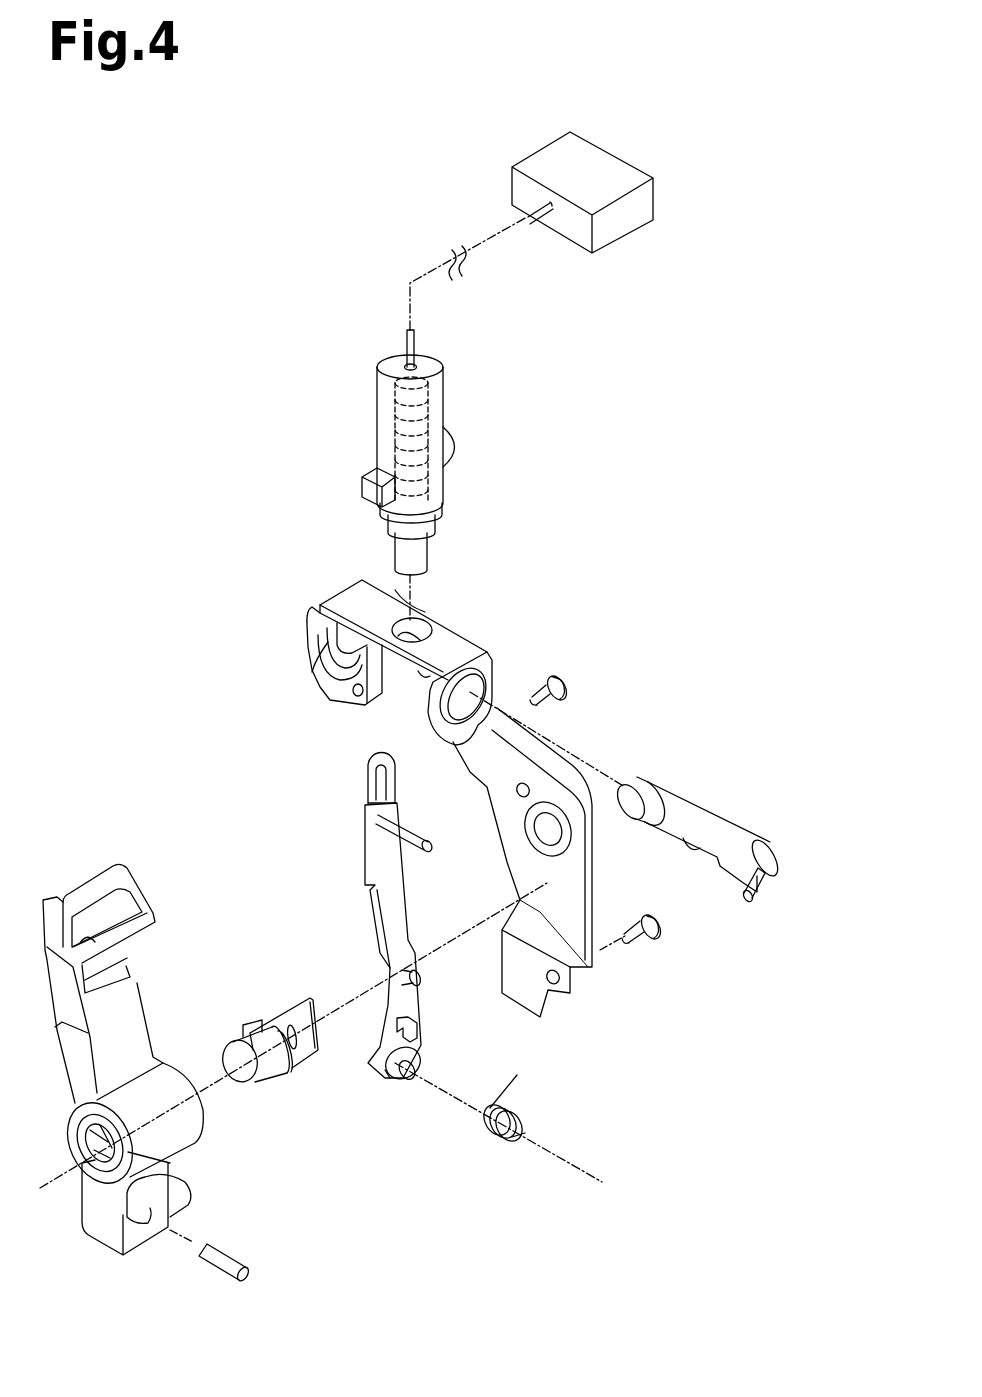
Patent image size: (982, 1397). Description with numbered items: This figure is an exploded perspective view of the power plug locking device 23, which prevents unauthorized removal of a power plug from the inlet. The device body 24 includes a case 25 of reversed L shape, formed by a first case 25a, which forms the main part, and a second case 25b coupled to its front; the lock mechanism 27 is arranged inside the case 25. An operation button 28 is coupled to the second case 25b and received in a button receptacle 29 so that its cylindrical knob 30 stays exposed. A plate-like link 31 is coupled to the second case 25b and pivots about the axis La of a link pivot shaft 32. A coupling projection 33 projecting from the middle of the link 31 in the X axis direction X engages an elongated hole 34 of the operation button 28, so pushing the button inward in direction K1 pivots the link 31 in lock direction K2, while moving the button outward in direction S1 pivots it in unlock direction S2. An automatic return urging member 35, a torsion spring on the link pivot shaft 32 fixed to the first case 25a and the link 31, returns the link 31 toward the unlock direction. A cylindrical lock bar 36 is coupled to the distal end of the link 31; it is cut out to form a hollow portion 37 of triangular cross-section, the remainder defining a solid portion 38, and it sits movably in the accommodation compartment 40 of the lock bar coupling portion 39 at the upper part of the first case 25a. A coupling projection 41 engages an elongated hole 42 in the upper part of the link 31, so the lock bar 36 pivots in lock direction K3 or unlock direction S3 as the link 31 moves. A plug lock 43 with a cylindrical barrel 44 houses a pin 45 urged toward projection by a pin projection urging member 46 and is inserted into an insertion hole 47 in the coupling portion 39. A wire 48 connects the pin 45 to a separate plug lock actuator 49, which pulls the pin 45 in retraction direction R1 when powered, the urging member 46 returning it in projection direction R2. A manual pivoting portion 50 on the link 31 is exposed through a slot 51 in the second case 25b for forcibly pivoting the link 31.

The power plug locking device 23 is at (141, 300).
The device body 24 is at (615, 631).
The case 25 is at (288, 695).
The first case 25a is at (312, 672).
The second case 25b is at (128, 978).
The lock mechanism 27 is at (667, 1178).
The operation button 28 is at (245, 1072).
The button receptacle 29 is at (102, 1138).
The knob 30 is at (224, 1060).
The link 31 is at (392, 941).
The link pivot shaft 32 is at (395, 1082).
The coupling projection 33 is at (423, 978).
The elongated hole 34 is at (300, 1050).
The automatic return urging member 35 is at (488, 1142).
The lock bar 36 is at (697, 848).
The hollow portion 37 is at (701, 843).
The solid portion 38 is at (650, 818).
The lock bar coupling portion 39 is at (401, 639).
The accommodation compartment 40 is at (413, 625).
The coupling projection 41 is at (741, 900).
The elongated hole 42 is at (377, 788).
The plug lock 43 is at (436, 475).
The barrel 44 is at (437, 410).
The pin 45 is at (423, 548).
The pin projection urging member 46 is at (447, 477).
The insertion hole 47 is at (392, 594).
The wire 48 is at (433, 272).
The plug lock actuator 49 is at (625, 238).
The manual pivoting portion 50 is at (427, 837).
The slot 51 is at (140, 963).
The retraction direction R1 is at (289, 407).
The projection direction R2 is at (268, 418).
The inward direction K1 is at (246, 962).
The outward direction S1 is at (229, 1004).
The lock direction of link K2 is at (576, 1157).
The unlock direction of link S2 is at (585, 1180).
The lock direction of lock bar K3 is at (611, 774).
The unlock direction of lock bar S3 is at (537, 763).
The axis La is at (627, 1188).
The X axis direction X is at (453, 1003).